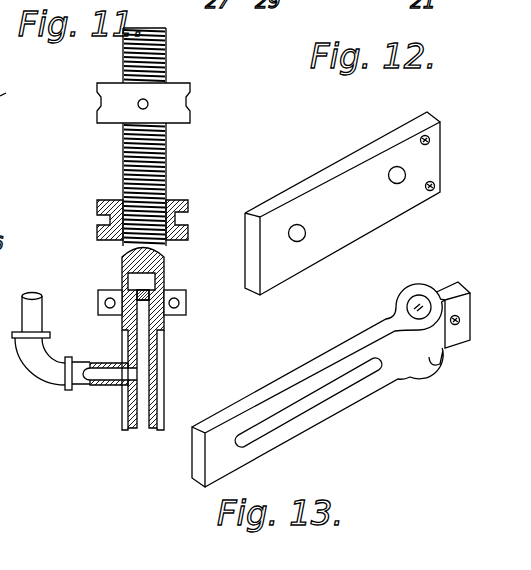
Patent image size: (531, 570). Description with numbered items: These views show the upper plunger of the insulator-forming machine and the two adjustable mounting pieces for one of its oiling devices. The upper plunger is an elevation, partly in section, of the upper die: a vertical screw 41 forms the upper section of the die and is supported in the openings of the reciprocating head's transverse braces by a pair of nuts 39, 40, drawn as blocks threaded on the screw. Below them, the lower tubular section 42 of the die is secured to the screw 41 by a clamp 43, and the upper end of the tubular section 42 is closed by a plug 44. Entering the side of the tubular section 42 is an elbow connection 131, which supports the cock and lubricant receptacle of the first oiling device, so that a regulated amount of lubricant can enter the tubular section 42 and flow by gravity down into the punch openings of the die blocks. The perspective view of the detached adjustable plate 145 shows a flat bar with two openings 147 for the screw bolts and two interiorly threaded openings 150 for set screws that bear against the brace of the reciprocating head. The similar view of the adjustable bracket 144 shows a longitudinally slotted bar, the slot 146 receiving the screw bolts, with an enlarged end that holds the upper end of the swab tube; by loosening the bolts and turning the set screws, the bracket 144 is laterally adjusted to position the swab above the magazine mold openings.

In FIG. 11, the nut 39 is at (190, 117).
In FIG. 11, the nut 40 is at (188, 205).
In FIG. 11, the vertical screw 41 is at (135, 154).
In FIG. 11, the tubular section 42 is at (155, 363).
In FIG. 11, the clamp 43 is at (186, 298).
In FIG. 11, the plug 44 is at (143, 289).
In FIG. 11, the elbow connection 131 is at (43, 368).
In FIG. 12, the adjustable plate 145 is at (381, 208).
In FIG. 12, the openings 147 is at (397, 166).
In FIG. 12, the interiorly threaded openings 150 is at (435, 184).
In FIG. 13, the adjustable bracket 144 is at (440, 366).
In FIG. 13, the slot 146 is at (277, 423).